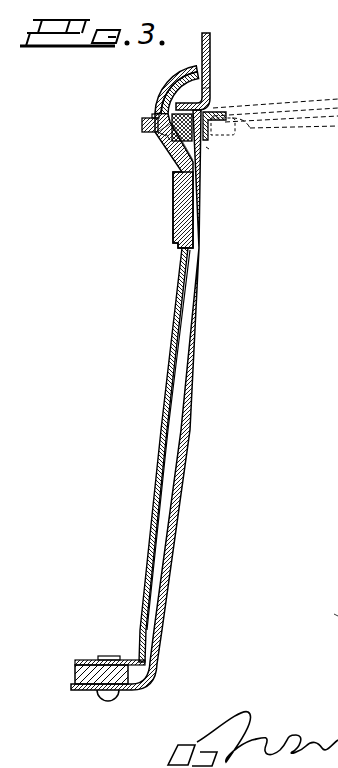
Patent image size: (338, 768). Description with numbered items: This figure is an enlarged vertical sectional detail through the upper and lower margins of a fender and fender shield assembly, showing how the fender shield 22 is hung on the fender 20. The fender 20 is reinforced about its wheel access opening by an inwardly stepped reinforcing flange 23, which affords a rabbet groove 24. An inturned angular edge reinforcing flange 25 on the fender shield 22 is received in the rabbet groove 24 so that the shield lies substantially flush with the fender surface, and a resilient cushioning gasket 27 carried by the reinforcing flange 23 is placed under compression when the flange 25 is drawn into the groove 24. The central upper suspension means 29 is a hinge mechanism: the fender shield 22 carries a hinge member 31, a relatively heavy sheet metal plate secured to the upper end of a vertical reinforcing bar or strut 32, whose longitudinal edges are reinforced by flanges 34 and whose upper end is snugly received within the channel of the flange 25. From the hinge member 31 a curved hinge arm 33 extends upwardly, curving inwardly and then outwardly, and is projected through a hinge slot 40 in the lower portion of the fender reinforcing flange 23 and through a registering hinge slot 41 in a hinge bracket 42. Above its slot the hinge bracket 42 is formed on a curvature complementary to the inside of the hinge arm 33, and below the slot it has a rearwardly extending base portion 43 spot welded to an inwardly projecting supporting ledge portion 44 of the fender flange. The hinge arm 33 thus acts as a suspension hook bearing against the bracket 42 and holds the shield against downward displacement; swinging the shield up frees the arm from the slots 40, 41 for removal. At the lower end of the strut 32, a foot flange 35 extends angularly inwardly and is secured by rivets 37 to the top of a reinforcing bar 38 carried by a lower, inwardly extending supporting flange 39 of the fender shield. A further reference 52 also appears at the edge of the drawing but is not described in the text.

The mounting strip 20 is at (211, 42).
The panel 22 is at (322, 96).
The bent portion of strip 23 is at (204, 88).
The flange 24 is at (210, 111).
The bracket 25 is at (210, 124).
The hinge pin 27 is at (204, 147).
The arm 29 is at (174, 182).
The bar 31 is at (180, 214).
The strip 32 is at (168, 384).
The hinge member 33 is at (159, 97).
The layer 34 is at (181, 352).
The top strip 35 is at (88, 661).
The projection 37 is at (113, 657).
The bottom block 38 is at (77, 673).
The roller 39 is at (98, 690).
The washer 40 is at (158, 136).
The washer 41 is at (168, 138).
The outer arc member 42 is at (176, 79).
The nut 43 is at (142, 124).
The bolt 44 is at (152, 134).
The element 52 is at (326, 608).